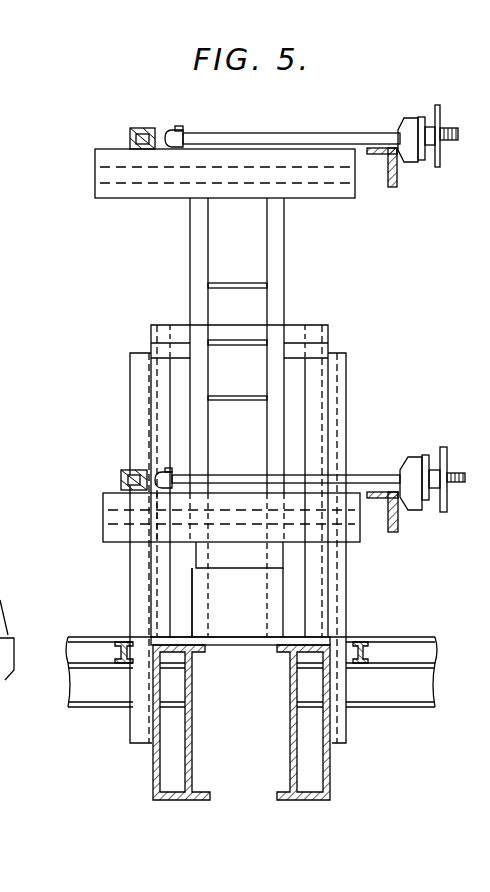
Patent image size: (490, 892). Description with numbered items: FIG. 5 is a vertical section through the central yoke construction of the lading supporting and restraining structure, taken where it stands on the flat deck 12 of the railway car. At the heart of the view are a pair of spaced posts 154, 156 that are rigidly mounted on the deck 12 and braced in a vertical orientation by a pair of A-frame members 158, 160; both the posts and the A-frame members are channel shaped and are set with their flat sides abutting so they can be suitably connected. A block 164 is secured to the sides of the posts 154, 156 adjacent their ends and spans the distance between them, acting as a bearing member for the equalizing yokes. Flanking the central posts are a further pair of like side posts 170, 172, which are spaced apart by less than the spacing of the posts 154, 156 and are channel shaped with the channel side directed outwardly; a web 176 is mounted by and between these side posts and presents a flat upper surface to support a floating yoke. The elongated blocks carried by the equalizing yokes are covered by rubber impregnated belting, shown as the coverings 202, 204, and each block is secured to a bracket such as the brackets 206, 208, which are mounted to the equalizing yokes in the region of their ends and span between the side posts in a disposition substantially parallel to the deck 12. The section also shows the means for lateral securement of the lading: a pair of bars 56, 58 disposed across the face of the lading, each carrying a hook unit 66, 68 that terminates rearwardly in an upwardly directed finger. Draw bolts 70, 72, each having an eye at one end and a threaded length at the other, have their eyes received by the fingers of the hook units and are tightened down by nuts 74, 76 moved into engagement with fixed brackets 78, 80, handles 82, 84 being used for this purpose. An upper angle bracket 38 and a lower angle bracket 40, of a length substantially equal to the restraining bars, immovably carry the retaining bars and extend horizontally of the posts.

The deck 12 is at (110, 685).
The upper angle bracket 38 is at (392, 188).
The lower angle bracket 40 is at (392, 520).
The bar 56 is at (140, 128).
The bar 58 is at (128, 470).
The hook unit 66 is at (163, 135).
The hook unit 68 is at (150, 490).
The draw bolt 70 is at (281, 119).
The draw bolt 72 is at (231, 464).
The nut 74 is at (428, 150).
The nut 76 is at (436, 470).
The fixed bracket 78 is at (410, 130).
The fixed bracket 80 is at (408, 463).
The handle 82 is at (441, 113).
The handle 84 is at (449, 500).
The post 154 is at (160, 393).
The post 156 is at (312, 370).
The A-frame member 158 is at (138, 372).
The A-frame member 160 is at (340, 388).
The block 164 is at (313, 332).
The side post 170 is at (300, 610).
The side post 172 is at (182, 585).
The web 176 is at (258, 560).
The covering 202 is at (140, 192).
The covering 204 is at (120, 533).
The bracket 206 is at (187, 191).
The bracket 208 is at (192, 535).